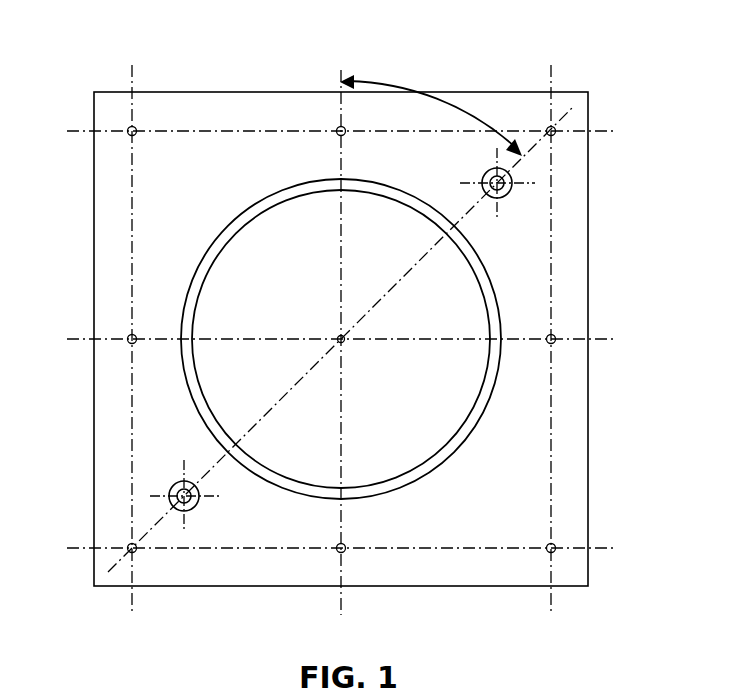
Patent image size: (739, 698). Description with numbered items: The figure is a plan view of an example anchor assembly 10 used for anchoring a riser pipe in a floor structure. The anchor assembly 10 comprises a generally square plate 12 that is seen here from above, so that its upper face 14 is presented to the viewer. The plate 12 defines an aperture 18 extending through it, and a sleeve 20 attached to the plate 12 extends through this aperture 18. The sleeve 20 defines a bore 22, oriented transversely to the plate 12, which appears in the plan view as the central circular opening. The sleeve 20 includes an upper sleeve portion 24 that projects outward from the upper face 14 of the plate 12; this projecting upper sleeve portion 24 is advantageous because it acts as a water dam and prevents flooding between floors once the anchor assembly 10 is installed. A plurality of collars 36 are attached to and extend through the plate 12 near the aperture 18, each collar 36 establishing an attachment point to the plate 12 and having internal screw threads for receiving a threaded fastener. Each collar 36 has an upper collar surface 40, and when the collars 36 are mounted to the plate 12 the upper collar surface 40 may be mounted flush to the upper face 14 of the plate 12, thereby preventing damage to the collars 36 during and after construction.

The anchor assembly 10 is at (590, 34).
The plate 12 is at (588, 480).
The upper face 14 is at (502, 498).
The aperture 18 is at (455, 394).
The sleeve 20 is at (495, 291).
The bore 22 is at (396, 382).
The upper sleeve portion 24 is at (270, 193).
The collars 36 is at (513, 191).
The upper collar surface 40 is at (197, 507).